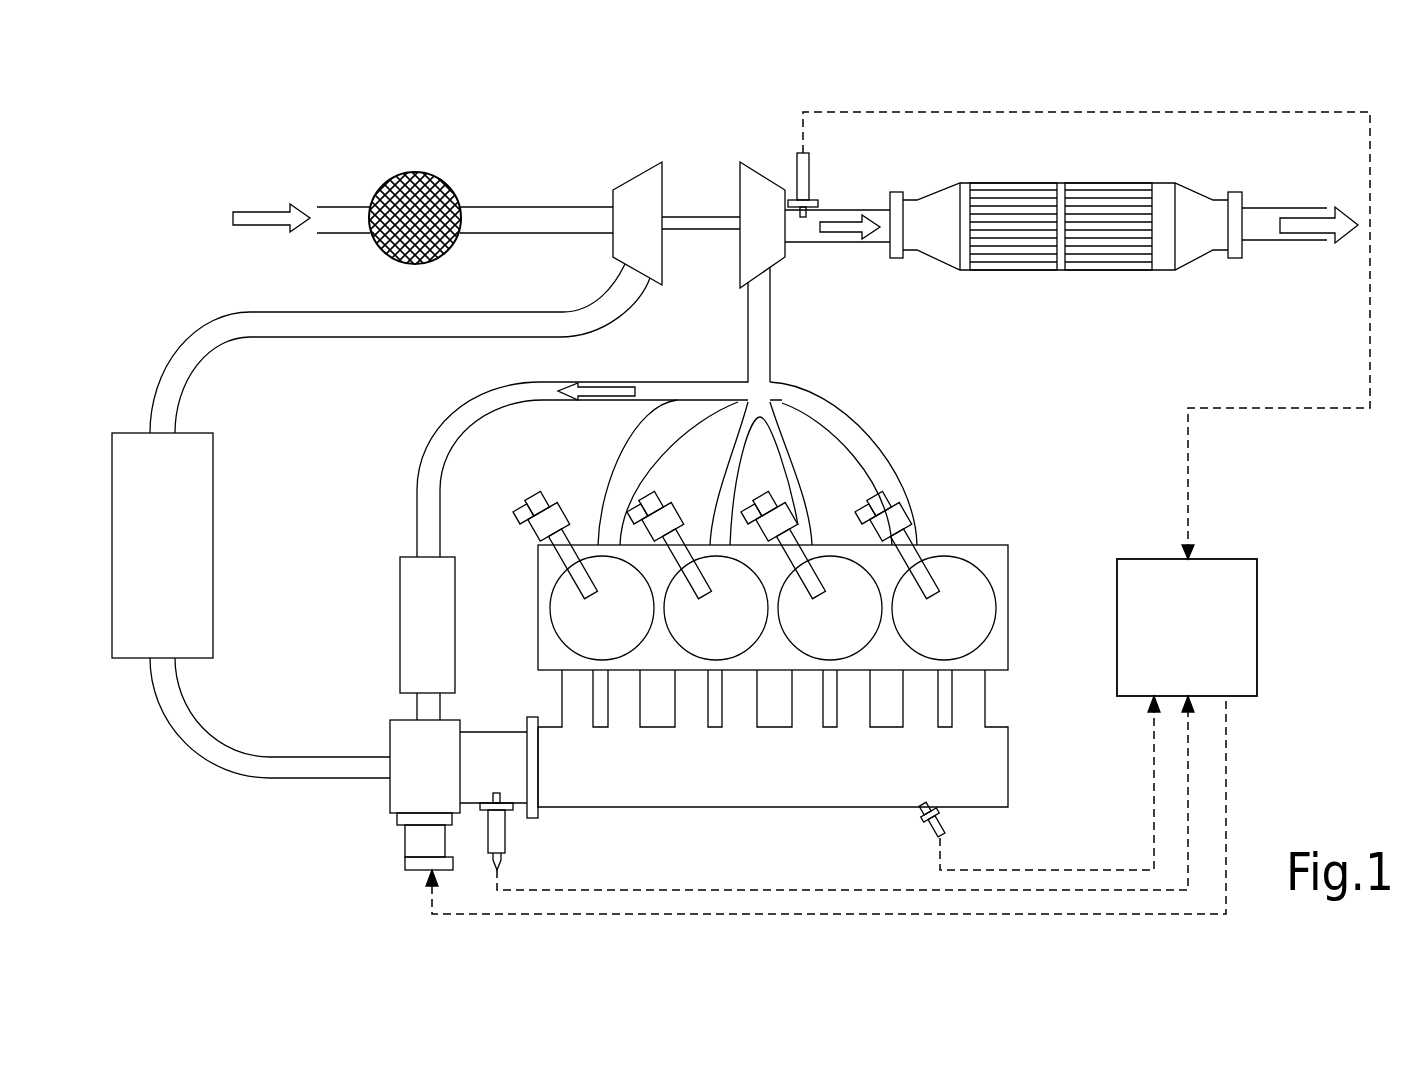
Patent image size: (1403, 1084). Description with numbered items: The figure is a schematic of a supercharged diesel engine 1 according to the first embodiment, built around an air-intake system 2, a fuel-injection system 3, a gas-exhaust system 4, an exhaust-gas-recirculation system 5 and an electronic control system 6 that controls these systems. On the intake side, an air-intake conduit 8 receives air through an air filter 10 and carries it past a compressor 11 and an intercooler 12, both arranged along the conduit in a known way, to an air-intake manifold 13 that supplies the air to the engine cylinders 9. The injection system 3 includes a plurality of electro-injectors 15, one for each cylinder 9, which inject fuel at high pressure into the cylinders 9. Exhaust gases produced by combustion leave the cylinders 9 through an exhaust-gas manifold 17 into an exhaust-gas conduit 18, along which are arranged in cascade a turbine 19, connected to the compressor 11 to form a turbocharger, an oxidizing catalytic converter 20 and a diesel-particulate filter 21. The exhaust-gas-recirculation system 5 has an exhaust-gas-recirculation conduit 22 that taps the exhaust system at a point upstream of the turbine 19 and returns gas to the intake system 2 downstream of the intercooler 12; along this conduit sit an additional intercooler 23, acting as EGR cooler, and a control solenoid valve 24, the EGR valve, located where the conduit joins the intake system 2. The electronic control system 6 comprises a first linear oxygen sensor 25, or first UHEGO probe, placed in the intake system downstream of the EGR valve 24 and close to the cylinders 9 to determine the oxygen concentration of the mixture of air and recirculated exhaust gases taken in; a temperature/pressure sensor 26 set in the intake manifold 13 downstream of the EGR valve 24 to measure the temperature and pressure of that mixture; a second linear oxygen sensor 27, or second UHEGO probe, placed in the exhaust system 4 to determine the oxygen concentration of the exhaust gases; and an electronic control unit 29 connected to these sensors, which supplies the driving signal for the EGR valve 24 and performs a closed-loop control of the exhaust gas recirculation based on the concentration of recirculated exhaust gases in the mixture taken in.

The supercharged diesel engine 1 is at (306, 824).
The air-intake system 2 is at (510, 187).
The fuel-injection system 3 is at (941, 524).
The gas-exhaust system 4 is at (853, 194).
The exhaust-gas-recirculation system 5 is at (396, 539).
The electronic control system 6 is at (1099, 631).
The air-intake conduit 8 is at (554, 206).
The engine cylinders 9 is at (969, 597).
The air filter 10 is at (397, 177).
The compressor 11 is at (655, 183).
The intercooler 12 is at (188, 510).
The air-intake manifold 13 is at (736, 809).
The electro-injectors 15 is at (648, 500).
The exhaust-gas manifold 17 is at (833, 389).
The exhaust-gas conduit 18 is at (1260, 196).
The turbine 19 is at (748, 182).
The oxidizing catalytic converter 20 is at (1003, 200).
The diesel-particulate filter 21 is at (1125, 200).
The exhaust-gas-recirculation conduit 22 is at (645, 381).
The additional intercooler 23 is at (407, 628).
The control solenoid valve 24 is at (412, 790).
The first linear oxygen sensor 25 is at (498, 840).
The temperature/pressure sensor 26 is at (948, 818).
The second linear oxygen sensor 27 is at (812, 183).
The electronic control unit 29 is at (1242, 568).